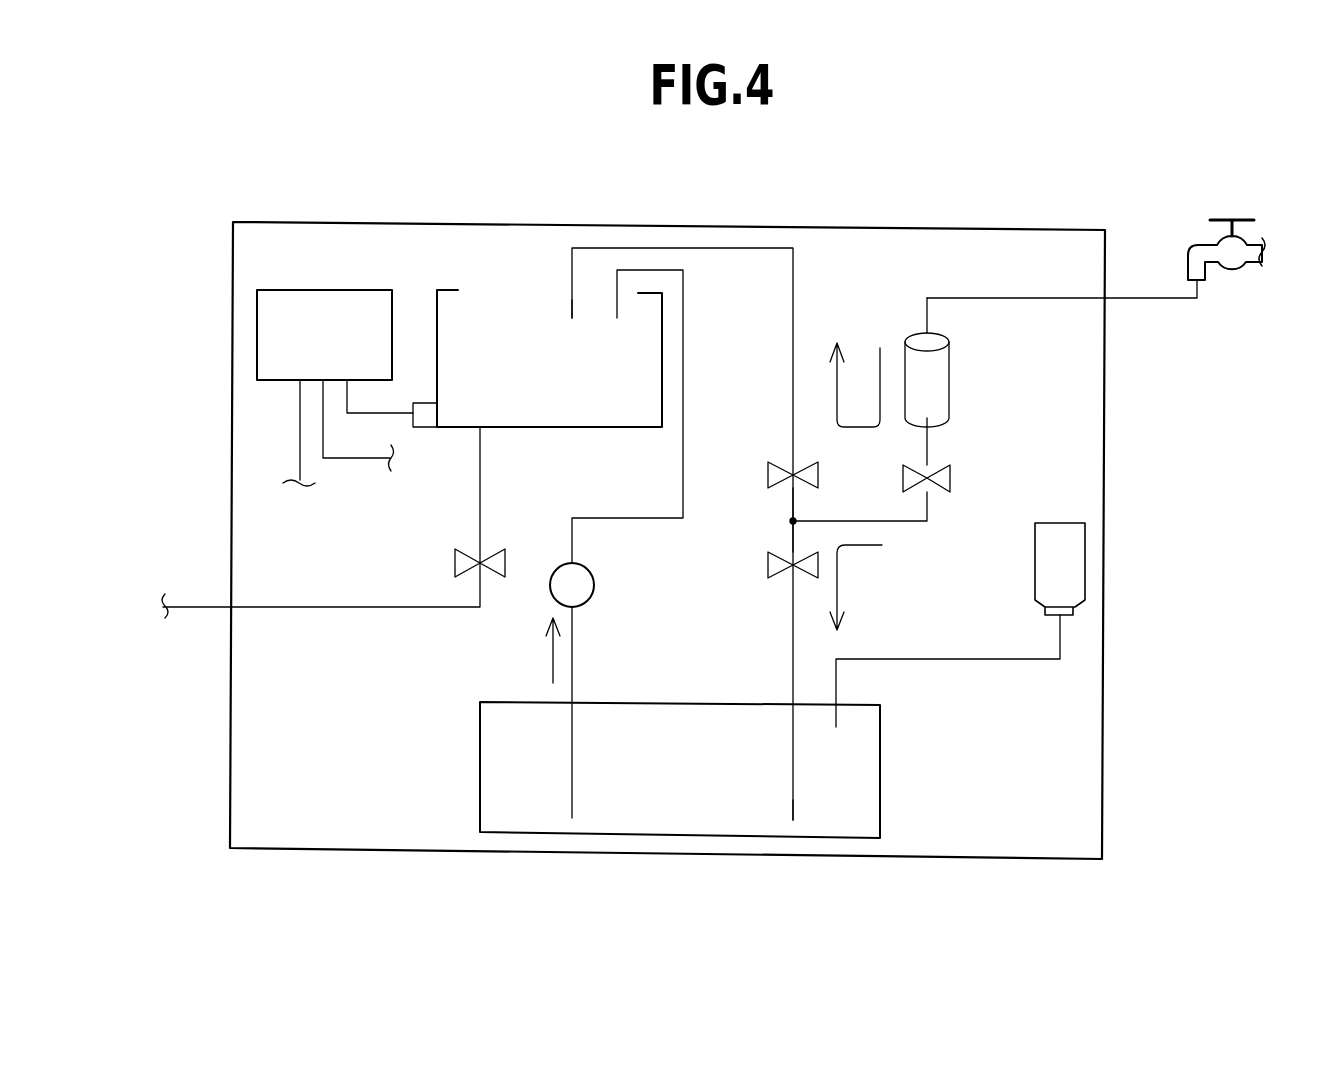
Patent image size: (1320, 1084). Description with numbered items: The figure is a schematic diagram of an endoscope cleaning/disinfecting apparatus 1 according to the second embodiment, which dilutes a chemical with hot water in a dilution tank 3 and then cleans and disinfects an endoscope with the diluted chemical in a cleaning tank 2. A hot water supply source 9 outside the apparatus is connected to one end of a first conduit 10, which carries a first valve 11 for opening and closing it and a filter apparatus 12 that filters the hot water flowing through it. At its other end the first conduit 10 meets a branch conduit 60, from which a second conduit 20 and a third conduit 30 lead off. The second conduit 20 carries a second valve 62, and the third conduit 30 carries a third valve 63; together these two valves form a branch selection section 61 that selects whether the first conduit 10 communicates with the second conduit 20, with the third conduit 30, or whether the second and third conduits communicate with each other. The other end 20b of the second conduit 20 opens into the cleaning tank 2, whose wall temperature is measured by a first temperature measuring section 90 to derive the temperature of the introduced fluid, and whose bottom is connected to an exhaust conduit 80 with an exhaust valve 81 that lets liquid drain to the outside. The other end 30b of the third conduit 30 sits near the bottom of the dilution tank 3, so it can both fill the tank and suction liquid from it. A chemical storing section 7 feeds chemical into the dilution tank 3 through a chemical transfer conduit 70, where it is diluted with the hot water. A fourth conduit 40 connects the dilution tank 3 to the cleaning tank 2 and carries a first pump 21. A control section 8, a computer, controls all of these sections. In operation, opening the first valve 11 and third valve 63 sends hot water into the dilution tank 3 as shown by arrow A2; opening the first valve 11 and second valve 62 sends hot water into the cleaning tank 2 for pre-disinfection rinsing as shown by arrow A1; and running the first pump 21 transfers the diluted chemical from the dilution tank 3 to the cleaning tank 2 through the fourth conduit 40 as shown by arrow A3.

The endoscope cleaning/disinfecting apparatus 1 is at (286, 221).
The cleaning tank 2 is at (458, 290).
The dilution tank 3 is at (667, 838).
The chemical storing section 7 is at (1085, 568).
The control section 8 is at (256, 333).
The hot water supply source 9 is at (1205, 243).
The first conduit 10 is at (1000, 298).
The first valve 11 is at (950, 478).
The filter apparatus 12 is at (950, 358).
The second conduit 20 is at (718, 248).
The other end of second conduit 20b is at (572, 318).
The first pump 21 is at (558, 568).
The third conduit 30 is at (793, 654).
The other end of third conduit 30b is at (793, 803).
The fourth conduit 40 is at (618, 518).
The branch conduit 60 is at (795, 520).
The branch selection section 61 is at (700, 558).
The second valve 62 is at (768, 473).
The third valve 63 is at (768, 562).
The chemical transfer conduit 70 is at (1012, 660).
The exhaust conduit 80 is at (360, 605).
The exhaust valve 81 is at (455, 553).
The first temperature measuring section 90 is at (416, 403).
The arrow A1 is at (838, 384).
The arrow A2 is at (837, 586).
The arrow A3 is at (553, 655).